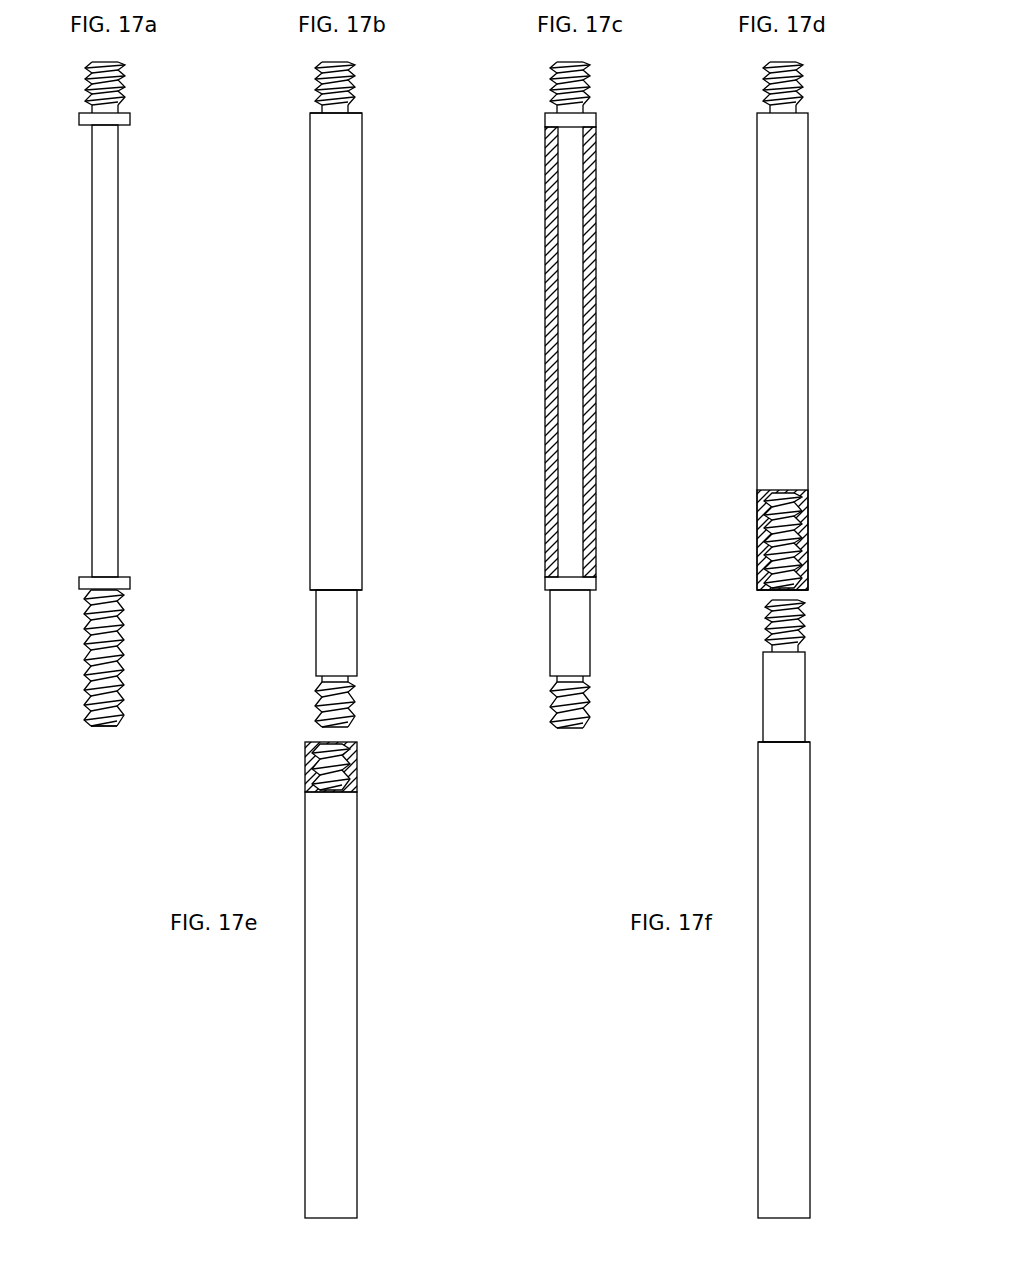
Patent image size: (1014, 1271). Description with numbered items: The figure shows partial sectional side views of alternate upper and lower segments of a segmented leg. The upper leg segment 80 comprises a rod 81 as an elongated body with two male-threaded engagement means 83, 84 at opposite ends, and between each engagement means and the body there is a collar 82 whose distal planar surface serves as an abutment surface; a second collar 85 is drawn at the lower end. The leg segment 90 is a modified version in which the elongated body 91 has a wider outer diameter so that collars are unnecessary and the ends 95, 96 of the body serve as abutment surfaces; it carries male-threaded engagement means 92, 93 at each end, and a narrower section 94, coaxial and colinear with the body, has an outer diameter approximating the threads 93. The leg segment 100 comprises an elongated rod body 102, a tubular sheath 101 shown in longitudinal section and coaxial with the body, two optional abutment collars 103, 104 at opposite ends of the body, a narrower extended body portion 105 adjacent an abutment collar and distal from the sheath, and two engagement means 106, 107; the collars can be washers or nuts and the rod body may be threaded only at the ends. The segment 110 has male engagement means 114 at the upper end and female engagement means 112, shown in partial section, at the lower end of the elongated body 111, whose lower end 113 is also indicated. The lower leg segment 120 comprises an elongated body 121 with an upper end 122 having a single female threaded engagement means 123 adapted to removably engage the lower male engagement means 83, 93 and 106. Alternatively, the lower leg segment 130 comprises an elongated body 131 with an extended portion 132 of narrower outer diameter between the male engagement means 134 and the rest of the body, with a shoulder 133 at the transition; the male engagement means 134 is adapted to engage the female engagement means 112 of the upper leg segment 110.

In FIG. 17a, the leg segment 80 is at (147, 209).
In FIG. 17a, the rod 81 is at (118, 367).
In FIG. 17a, the collar 82 is at (84, 593).
In FIG. 17a, the engagement means 83 is at (100, 728).
In FIG. 17a, the engagement means 84 is at (88, 72).
In FIG. 17a, the collar 85 is at (130, 580).
In FIG. 17b, the leg segment 90 is at (263, 518).
In FIG. 17b, the elongated body 91 is at (362, 325).
In FIG. 17b, the engagement means 92 is at (318, 72).
In FIG. 17b, the engagement means 93 is at (350, 702).
In FIG. 17b, the narrower section 94 is at (325, 612).
In FIG. 17b, the abutment surface 95 is at (350, 112).
In FIG. 17b, the abutment surface 96 is at (362, 590).
In FIG. 17c, the leg segment 100 is at (510, 225).
In FIG. 17c, the tubular sheath 101 is at (596, 210).
In FIG. 17c, the rod body 102 is at (570, 405).
In FIG. 17c, the abutment collar 103 is at (596, 120).
In FIG. 17c, the abutment collar 104 is at (545, 590).
In FIG. 17c, the extended body portion 105 is at (550, 630).
In FIG. 17c, the engagement means 106 is at (590, 700).
In FIG. 17c, the engagement means 107 is at (580, 82).
In FIG. 17d, the leg segment 110 is at (717, 453).
In FIG. 17d, the elongated body 111 is at (785, 330).
In FIG. 17d, the female engagement means 112 is at (808, 530).
In FIG. 17d, the lower end 113 is at (757, 590).
In FIG. 17d, the male engagement means 114 is at (800, 82).
In FIG. 17e, the lower leg segment 120 is at (389, 904).
In FIG. 17e, the elongated body 121 is at (320, 1020).
In FIG. 17e, the upper end 122 is at (351, 806).
In FIG. 17e, the engagement means 123 is at (355, 748).
In FIG. 17f, the post 130 is at (719, 842).
In FIG. 17f, the elongated body 131 is at (770, 967).
In FIG. 17f, the extended portion 132 is at (770, 678).
In FIG. 17f, the shoulder 133 is at (807, 747).
In FIG. 17f, the male engagement means 134 is at (805, 632).